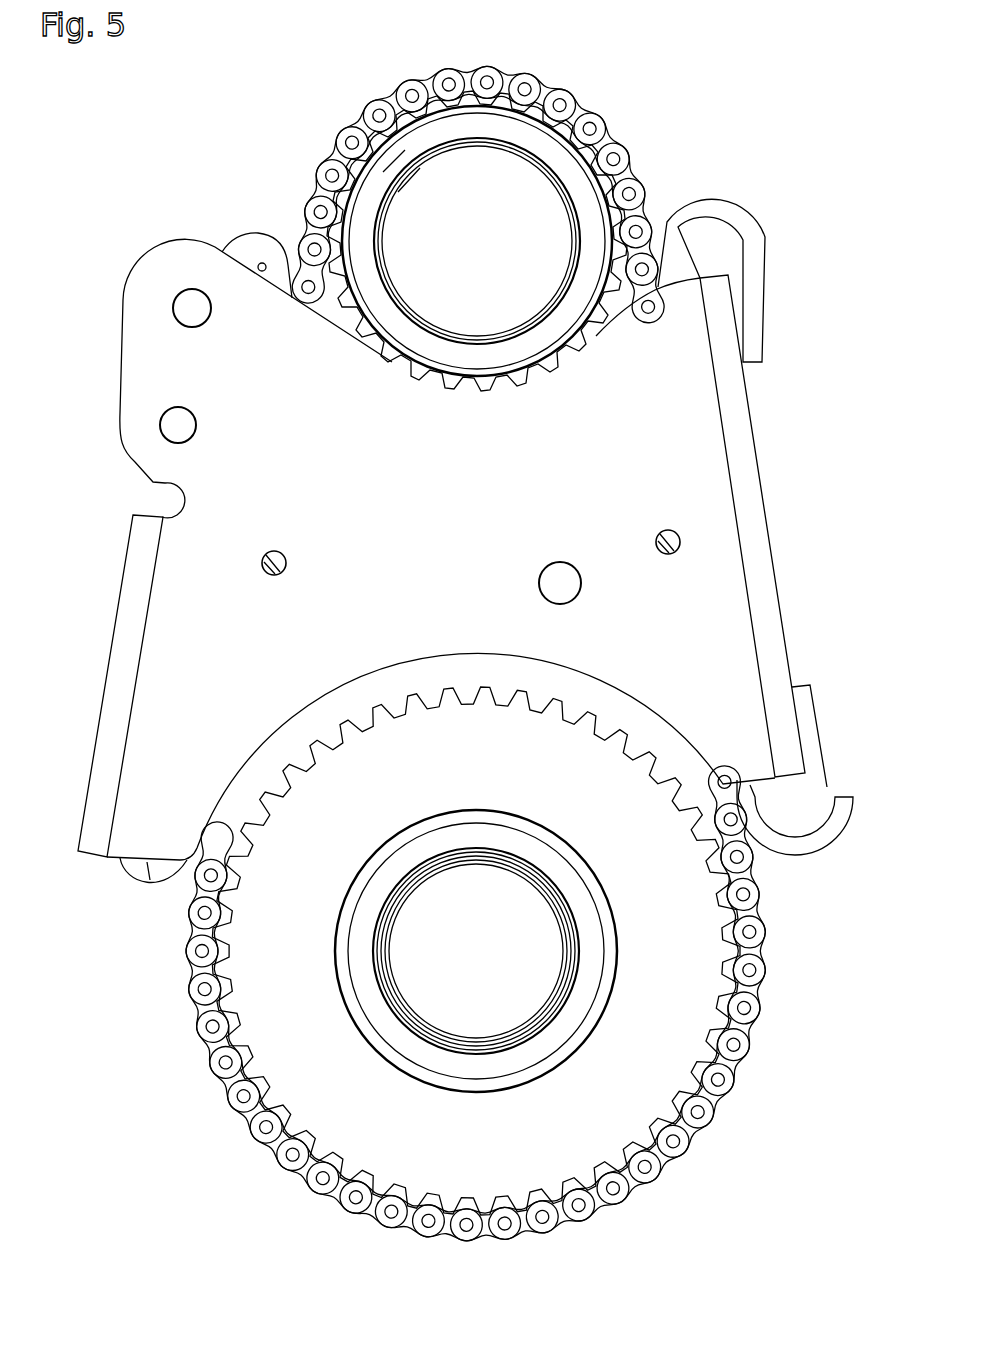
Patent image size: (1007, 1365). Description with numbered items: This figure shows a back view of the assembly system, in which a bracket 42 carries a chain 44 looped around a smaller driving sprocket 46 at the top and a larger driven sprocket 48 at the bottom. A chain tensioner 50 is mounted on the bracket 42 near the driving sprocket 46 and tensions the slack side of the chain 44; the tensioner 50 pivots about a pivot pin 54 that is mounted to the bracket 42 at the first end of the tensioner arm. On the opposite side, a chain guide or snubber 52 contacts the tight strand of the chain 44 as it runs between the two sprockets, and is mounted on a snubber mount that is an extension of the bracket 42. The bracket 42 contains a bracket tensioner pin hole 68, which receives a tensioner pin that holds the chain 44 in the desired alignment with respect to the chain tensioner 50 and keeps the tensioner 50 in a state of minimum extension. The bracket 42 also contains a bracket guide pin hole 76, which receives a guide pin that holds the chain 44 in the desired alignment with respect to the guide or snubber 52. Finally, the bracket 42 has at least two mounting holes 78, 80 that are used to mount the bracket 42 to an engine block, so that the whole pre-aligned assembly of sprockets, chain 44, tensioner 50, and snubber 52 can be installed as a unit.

The bracket 42 is at (418, 484).
The chain 44 is at (228, 1048).
The driving sprocket 46 is at (375, 200).
The driven sprocket 48 is at (274, 972).
The chain tensioner 50 is at (252, 245).
The chain guide or snubber 52 is at (727, 257).
The pivot pin 54 is at (193, 307).
The bracket tensioner pin hole 68 is at (262, 568).
The bracket guide pin hole 76 is at (680, 533).
The mounting hole 78 is at (583, 582).
The mounting hole 80 is at (180, 425).